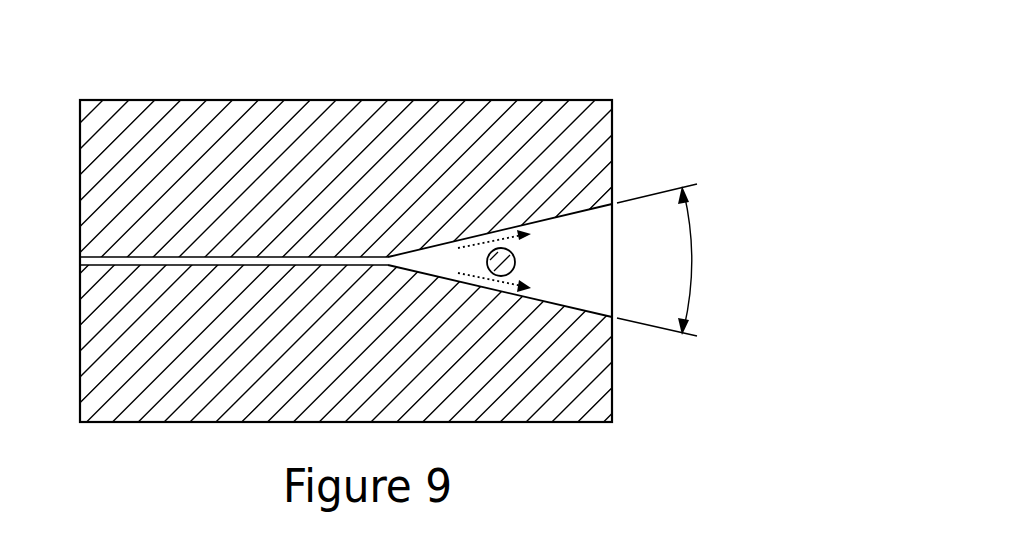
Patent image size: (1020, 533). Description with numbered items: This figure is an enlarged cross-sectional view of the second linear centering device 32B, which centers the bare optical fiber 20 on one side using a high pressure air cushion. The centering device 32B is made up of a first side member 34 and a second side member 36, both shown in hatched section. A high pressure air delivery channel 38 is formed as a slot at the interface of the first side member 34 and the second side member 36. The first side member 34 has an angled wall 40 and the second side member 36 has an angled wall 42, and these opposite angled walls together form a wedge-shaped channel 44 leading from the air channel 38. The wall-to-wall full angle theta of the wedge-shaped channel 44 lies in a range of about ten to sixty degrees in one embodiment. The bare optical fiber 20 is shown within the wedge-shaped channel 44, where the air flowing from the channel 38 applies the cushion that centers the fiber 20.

The second linear centering device 32B is at (622, 52).
The first side member 34 is at (267, 122).
The second side member 36 is at (198, 402).
The air delivery channel 38 is at (120, 257).
The angled wall 40 is at (580, 204).
The angled wall 42 is at (580, 312).
The wedge-shaped channel 44 is at (600, 259).
The bare optical fiber 20 is at (509, 251).